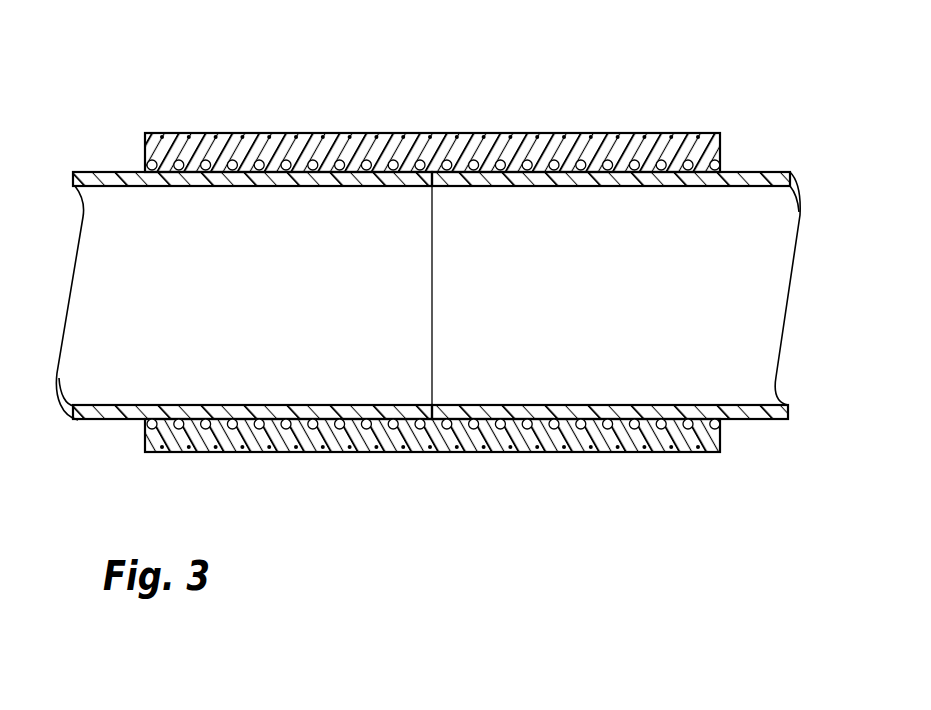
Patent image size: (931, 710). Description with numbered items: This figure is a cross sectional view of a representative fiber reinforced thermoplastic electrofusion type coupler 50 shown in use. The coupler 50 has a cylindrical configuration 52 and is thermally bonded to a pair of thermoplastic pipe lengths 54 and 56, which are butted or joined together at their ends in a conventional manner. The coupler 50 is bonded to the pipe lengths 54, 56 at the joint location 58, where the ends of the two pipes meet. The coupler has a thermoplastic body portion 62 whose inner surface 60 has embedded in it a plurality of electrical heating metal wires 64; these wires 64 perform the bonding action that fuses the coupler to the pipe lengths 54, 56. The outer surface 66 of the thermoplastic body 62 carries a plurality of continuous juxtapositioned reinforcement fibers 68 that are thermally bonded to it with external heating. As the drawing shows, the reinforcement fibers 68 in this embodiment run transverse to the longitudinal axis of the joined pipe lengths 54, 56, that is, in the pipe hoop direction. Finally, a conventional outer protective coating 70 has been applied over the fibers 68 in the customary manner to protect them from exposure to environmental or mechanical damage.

The electrofusion type coupler 50 is at (700, 93).
The cylindrical configuration 52 is at (723, 148).
The thermoplastic pipe length 54 is at (83, 170).
The thermoplastic pipe length 56 is at (789, 173).
The joint location 58 is at (433, 206).
The inner surface 60 is at (326, 172).
The thermoplastic body portion 62 is at (150, 432).
The electrical heating metal wires 64 is at (607, 167).
The outer surface 66 is at (345, 133).
The continuous juxtapositioned reinforcement fibers 68 is at (607, 133).
The outer protective coating 70 is at (218, 133).